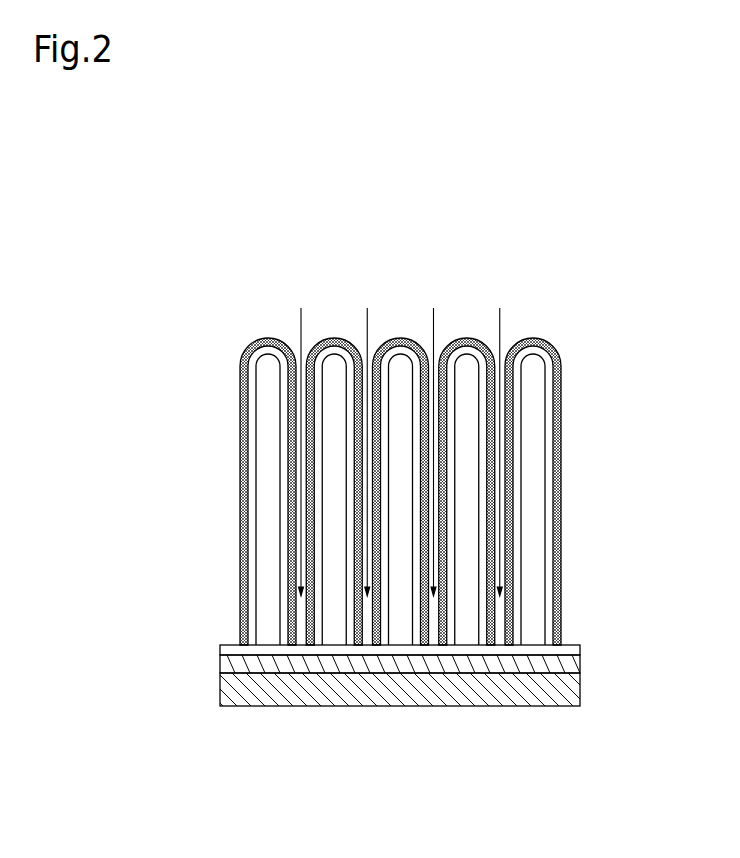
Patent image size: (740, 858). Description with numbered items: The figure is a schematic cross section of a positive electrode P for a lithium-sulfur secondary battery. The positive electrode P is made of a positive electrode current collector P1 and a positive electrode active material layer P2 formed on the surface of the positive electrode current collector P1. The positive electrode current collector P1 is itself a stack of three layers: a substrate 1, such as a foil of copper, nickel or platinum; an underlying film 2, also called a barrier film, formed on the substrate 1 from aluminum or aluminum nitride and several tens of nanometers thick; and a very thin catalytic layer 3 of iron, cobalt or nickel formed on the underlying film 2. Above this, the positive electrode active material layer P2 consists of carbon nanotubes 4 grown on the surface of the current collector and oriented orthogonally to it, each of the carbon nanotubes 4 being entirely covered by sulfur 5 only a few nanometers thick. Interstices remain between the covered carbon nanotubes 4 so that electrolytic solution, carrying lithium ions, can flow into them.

The substrate 1 is at (220, 690).
The underlying film 2 is at (220, 664).
The catalytic layer 3 is at (220, 651).
The carbon nanotubes 4 is at (240, 470).
The sulfur 5 is at (240, 518).
The positive electrode P is at (558, 283).
The positive electrode current collector P1 is at (163, 630).
The positive electrode active material layer P2 is at (183, 442).